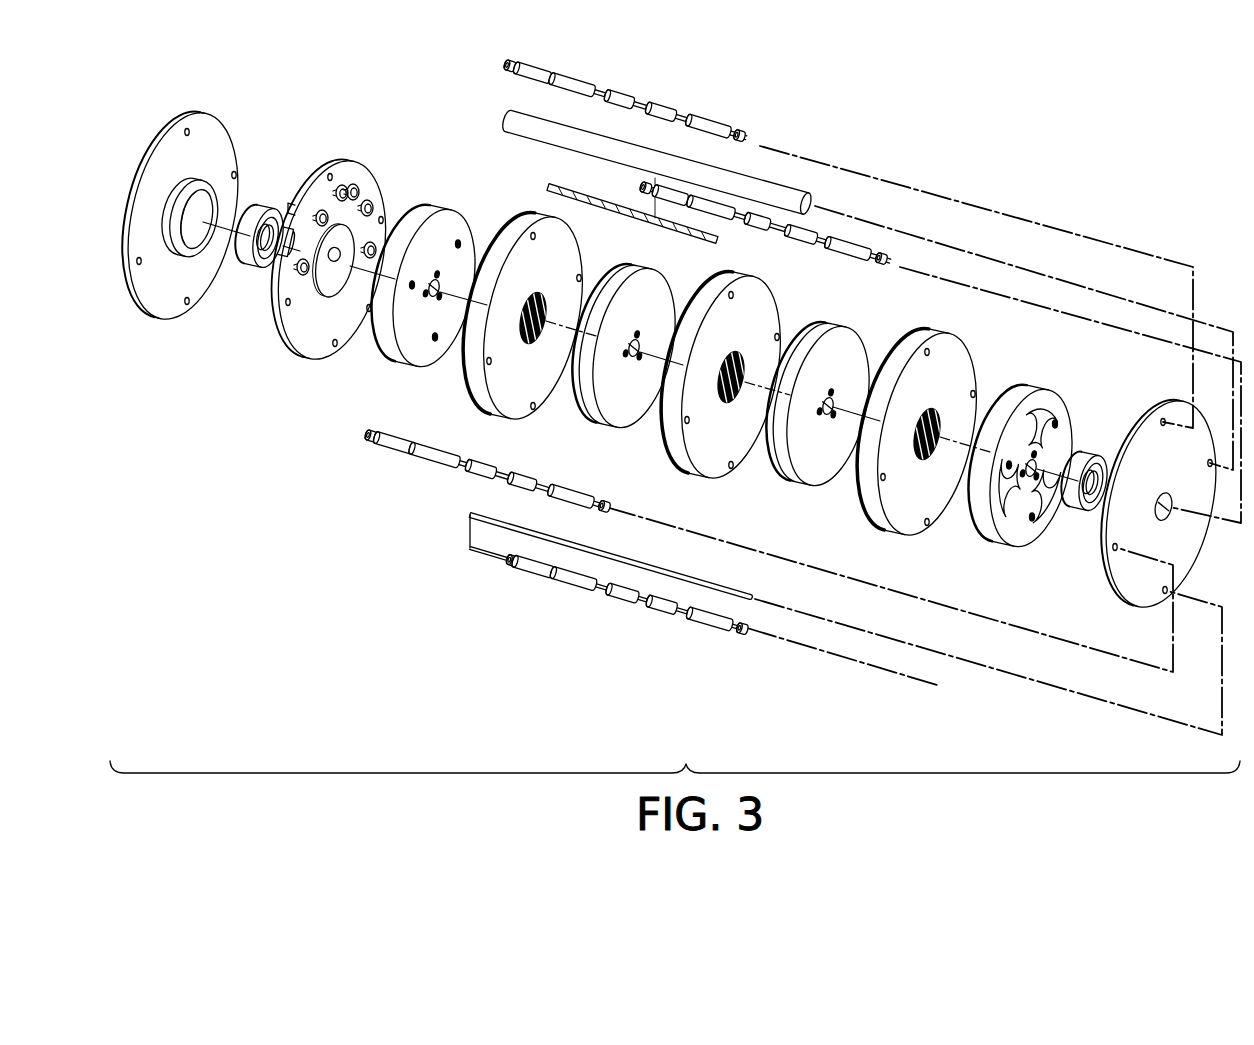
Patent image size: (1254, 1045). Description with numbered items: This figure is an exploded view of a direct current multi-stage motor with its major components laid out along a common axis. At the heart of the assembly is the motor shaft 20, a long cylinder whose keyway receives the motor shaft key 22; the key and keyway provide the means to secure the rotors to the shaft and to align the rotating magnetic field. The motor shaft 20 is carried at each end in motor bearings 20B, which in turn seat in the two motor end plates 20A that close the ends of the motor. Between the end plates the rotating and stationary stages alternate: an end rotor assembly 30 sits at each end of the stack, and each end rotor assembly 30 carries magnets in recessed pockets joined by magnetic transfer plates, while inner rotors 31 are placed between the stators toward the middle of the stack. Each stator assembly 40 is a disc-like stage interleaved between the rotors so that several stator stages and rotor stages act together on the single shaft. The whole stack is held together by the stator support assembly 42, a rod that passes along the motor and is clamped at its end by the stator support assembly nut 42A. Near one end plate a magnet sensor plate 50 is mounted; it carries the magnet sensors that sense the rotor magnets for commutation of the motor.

The motor shaft 20 is at (507, 113).
The motor end plate 20A is at (212, 110).
The motor bearings 20B is at (267, 207).
The motor shaft key 22 is at (548, 187).
The end rotor assembly 30 is at (400, 353).
The inner rotor 31 is at (588, 410).
The stator assembly 40 is at (493, 398).
The stator support assembly 42 is at (459, 504).
The stator support assembly nut 42A is at (369, 438).
The magnet sensor plate 50 is at (354, 158).